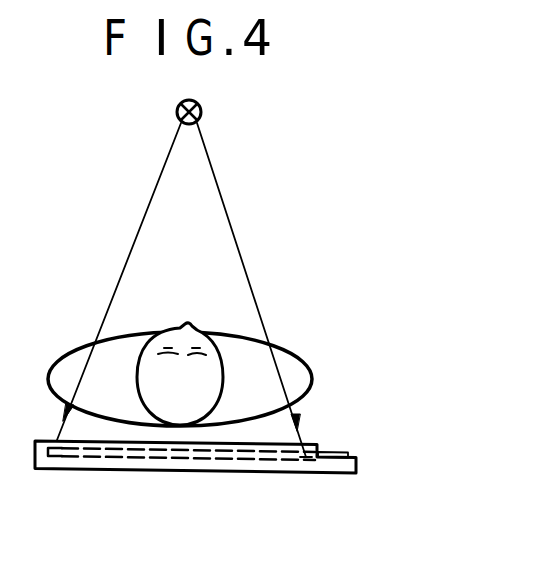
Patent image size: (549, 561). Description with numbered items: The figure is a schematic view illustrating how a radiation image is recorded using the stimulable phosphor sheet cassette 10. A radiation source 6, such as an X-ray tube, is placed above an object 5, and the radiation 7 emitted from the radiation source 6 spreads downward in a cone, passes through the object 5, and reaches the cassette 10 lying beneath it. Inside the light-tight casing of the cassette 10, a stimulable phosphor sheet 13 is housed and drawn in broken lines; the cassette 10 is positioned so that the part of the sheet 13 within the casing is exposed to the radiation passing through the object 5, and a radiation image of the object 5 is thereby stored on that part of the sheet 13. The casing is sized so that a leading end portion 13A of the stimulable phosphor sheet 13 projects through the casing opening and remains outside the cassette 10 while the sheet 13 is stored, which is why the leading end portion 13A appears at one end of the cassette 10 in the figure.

The object 5 is at (82, 346).
The radiation source 6 is at (177, 112).
The X-ray beam 7 is at (148, 203).
The stimulable phosphor sheet cassette 10 is at (130, 471).
The stimulable phosphor sheet 13 is at (194, 461).
The leading end portion 13A is at (346, 452).